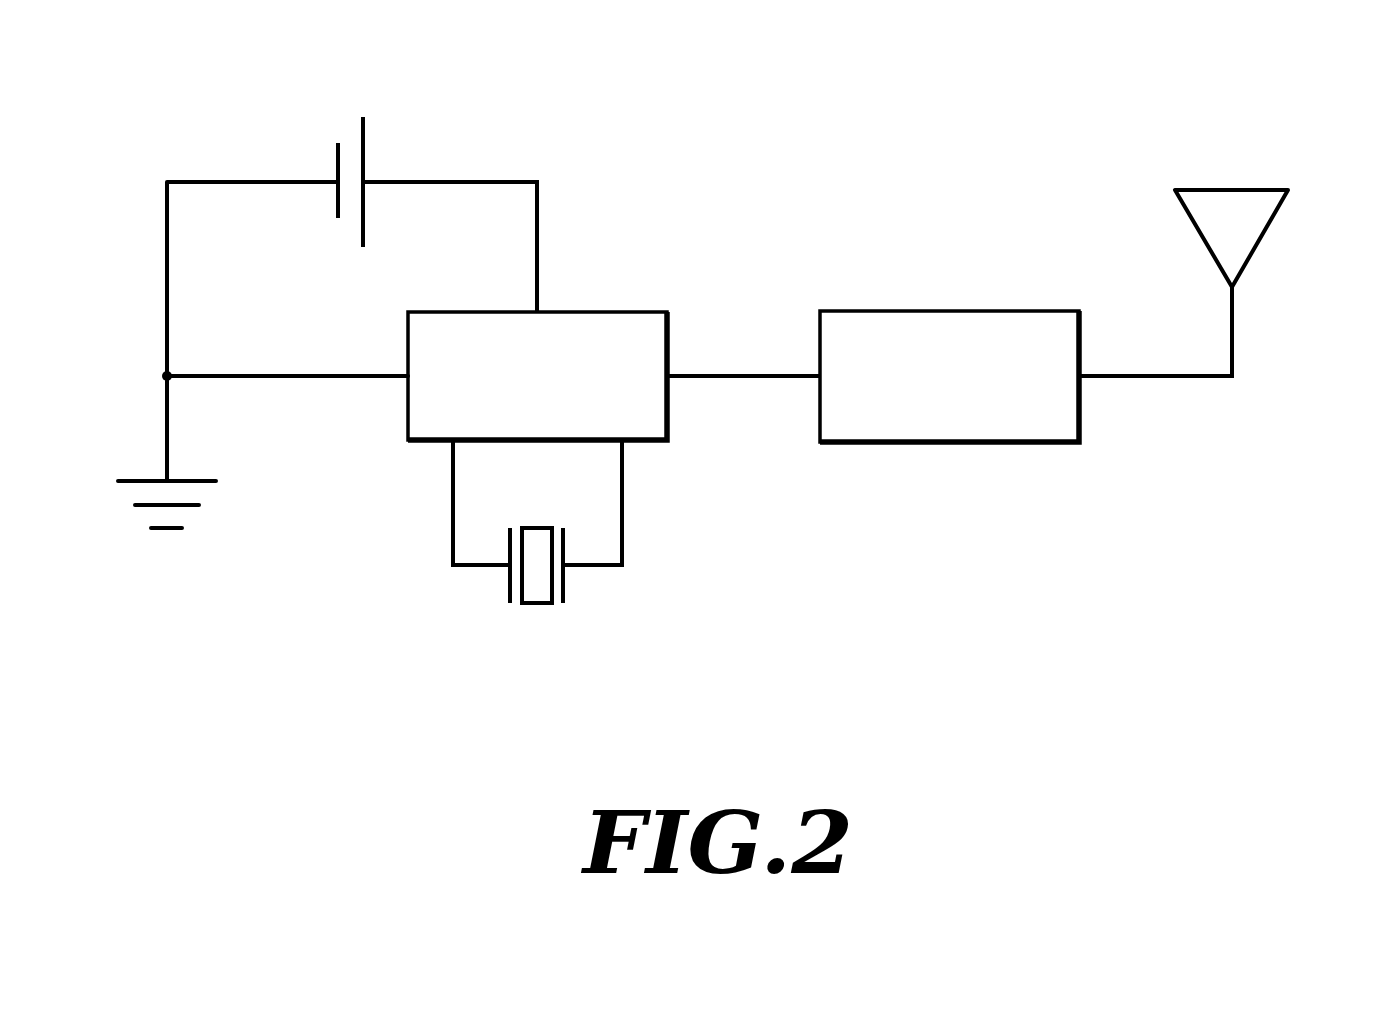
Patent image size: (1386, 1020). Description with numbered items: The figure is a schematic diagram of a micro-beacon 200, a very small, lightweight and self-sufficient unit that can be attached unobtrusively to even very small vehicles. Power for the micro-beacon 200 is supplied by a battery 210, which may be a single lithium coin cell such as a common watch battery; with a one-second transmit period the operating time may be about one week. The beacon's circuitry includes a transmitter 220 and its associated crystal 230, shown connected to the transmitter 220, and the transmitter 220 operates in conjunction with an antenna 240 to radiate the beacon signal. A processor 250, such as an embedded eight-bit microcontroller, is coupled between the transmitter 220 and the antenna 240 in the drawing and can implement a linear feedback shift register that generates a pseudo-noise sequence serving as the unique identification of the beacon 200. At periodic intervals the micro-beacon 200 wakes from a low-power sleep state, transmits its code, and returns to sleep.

The micro-beacon 200 is at (741, 370).
The battery 210 is at (240, 123).
The transmitter 220 is at (560, 395).
The crystal 230 is at (481, 594).
The antenna 240 is at (1254, 203).
The processor 250 is at (970, 395).